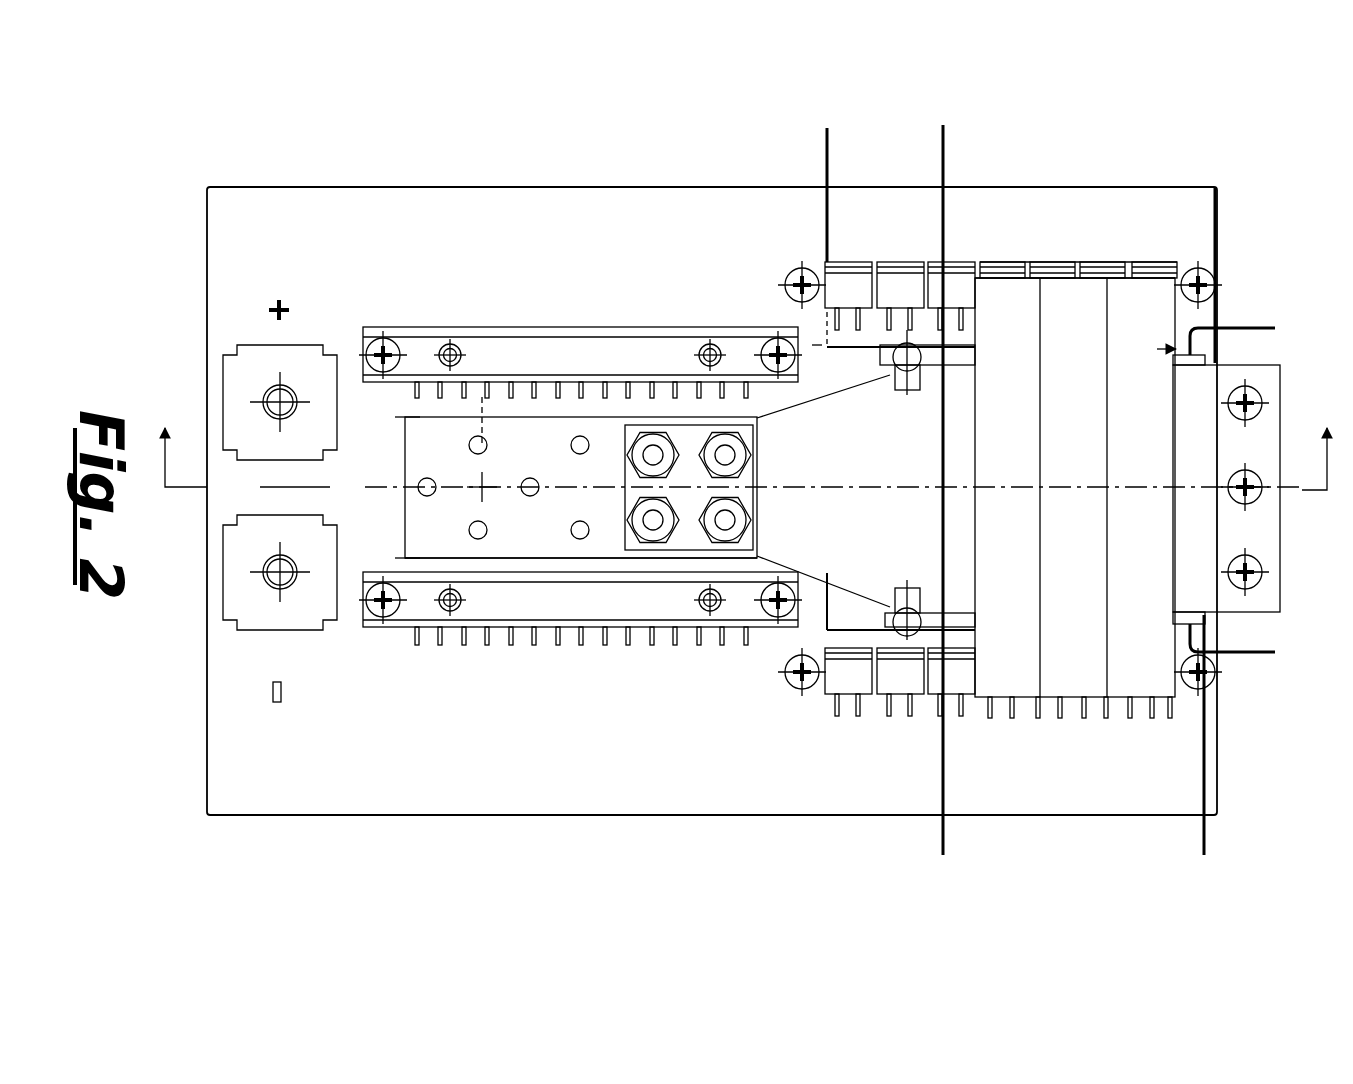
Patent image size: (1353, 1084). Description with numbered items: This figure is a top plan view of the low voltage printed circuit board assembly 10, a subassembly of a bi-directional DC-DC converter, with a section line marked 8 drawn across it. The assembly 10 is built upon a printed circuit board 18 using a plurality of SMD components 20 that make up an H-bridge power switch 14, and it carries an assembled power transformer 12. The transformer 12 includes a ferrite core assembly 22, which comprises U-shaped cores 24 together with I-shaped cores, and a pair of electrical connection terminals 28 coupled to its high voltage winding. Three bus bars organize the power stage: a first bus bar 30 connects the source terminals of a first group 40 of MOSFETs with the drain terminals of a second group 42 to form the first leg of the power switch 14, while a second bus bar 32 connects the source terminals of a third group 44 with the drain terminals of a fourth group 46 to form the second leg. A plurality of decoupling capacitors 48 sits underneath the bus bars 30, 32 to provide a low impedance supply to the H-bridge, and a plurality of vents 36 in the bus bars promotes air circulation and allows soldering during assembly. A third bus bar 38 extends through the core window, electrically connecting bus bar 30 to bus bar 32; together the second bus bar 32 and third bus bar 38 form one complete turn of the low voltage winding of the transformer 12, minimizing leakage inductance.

The section line 8- 8 is at (746, 435).
The low voltage printed circuit board assembly 10 is at (1217, 146).
The power transformer 12 is at (1082, 732).
The H-bridge power switch 14 is at (760, 268).
The printed circuit board 18 is at (497, 788).
The SMD components 20 is at (612, 320).
The ferrite core assembly 22 is at (1081, 300).
The U-shaped cores 24 is at (995, 608).
The electrical connection terminals 28 is at (1268, 330).
The first bus bar 30 is at (530, 530).
The second bus bar 32 is at (827, 632).
The vents 36 is at (579, 521).
The third bus bar 38 is at (815, 490).
The first group of power devices 40 is at (550, 318).
The second group of MOSFETs 42 is at (630, 677).
The third group of MOSFETs 44 is at (1138, 226).
The fourth group of MOSFETs 46 is at (1027, 792).
The decoupling capacitors 48 is at (376, 420).